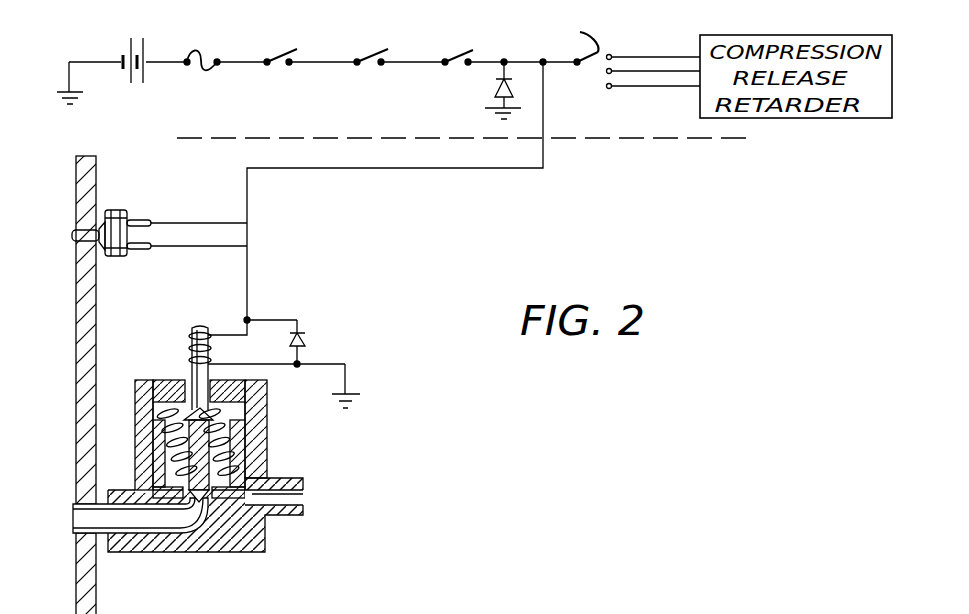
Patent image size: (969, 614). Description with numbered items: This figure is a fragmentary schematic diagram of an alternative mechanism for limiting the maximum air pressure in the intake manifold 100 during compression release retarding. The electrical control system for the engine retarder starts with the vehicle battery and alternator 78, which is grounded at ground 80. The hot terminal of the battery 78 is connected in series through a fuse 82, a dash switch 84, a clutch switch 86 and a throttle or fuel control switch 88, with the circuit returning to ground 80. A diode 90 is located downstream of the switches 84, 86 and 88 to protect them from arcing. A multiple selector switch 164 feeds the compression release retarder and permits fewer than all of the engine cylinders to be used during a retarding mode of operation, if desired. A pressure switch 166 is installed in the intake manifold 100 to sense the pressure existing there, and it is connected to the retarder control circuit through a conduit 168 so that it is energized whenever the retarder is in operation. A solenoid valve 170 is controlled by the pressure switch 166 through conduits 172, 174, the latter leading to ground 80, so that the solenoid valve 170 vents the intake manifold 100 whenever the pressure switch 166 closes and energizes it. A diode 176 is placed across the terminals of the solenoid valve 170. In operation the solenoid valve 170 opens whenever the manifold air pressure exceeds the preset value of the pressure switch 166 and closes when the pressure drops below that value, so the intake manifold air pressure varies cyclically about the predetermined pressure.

The vehicle battery and alternator 78 is at (133, 46).
The ground 80 is at (78, 99).
The fuse 82 is at (197, 50).
The dash switch 84 is at (282, 50).
The clutch switch 86 is at (372, 53).
The throttle or fuel control switch 88 is at (456, 57).
The diode 90 is at (493, 86).
The intake manifold 100 is at (96, 310).
The multiple selector switch 164 is at (598, 33).
The pressure switch 166 is at (118, 258).
The conduit 168 is at (247, 212).
The solenoid valve 170 is at (301, 453).
The conduit 172 is at (247, 270).
The conduit 174 is at (345, 364).
The diode 176 is at (305, 340).